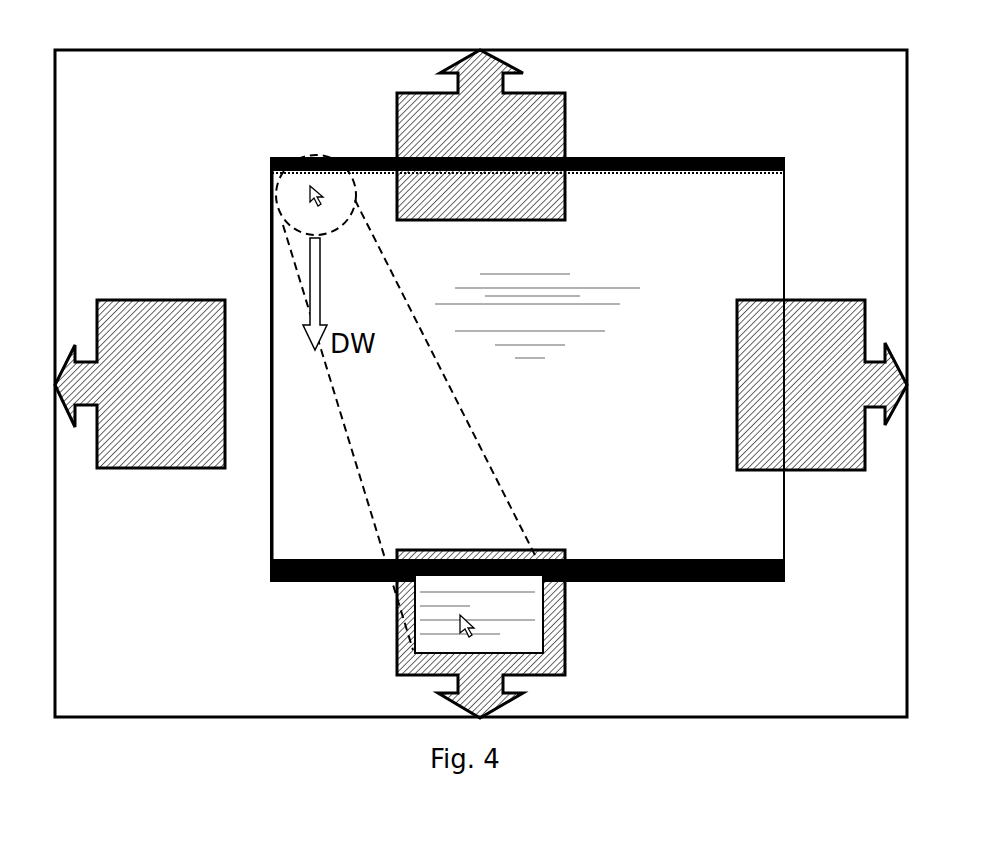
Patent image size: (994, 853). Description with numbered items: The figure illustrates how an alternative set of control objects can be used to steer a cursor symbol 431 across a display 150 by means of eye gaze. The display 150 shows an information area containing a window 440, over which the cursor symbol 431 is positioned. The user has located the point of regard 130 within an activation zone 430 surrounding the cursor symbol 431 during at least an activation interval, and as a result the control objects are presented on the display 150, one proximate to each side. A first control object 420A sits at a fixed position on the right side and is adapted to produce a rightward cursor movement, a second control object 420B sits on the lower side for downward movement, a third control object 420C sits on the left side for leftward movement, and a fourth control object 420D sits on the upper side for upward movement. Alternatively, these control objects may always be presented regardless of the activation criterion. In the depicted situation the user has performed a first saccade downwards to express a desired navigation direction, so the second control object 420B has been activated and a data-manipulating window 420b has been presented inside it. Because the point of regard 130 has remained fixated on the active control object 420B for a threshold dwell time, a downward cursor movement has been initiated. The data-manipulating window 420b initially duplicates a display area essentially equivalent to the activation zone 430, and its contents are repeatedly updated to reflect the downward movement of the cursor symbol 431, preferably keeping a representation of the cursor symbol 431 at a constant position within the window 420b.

The display 150 is at (903, 28).
The window 440 is at (542, 348).
The activation zone 430 is at (307, 158).
The cursor symbol 431 is at (310, 190).
The fourth control object 420D is at (538, 135).
The first control object 420A is at (822, 355).
The third control object 420C is at (143, 413).
The second control object 420B is at (535, 634).
The data-manipulating window 420b is at (544, 610).
The point of regard 130 is at (467, 613).